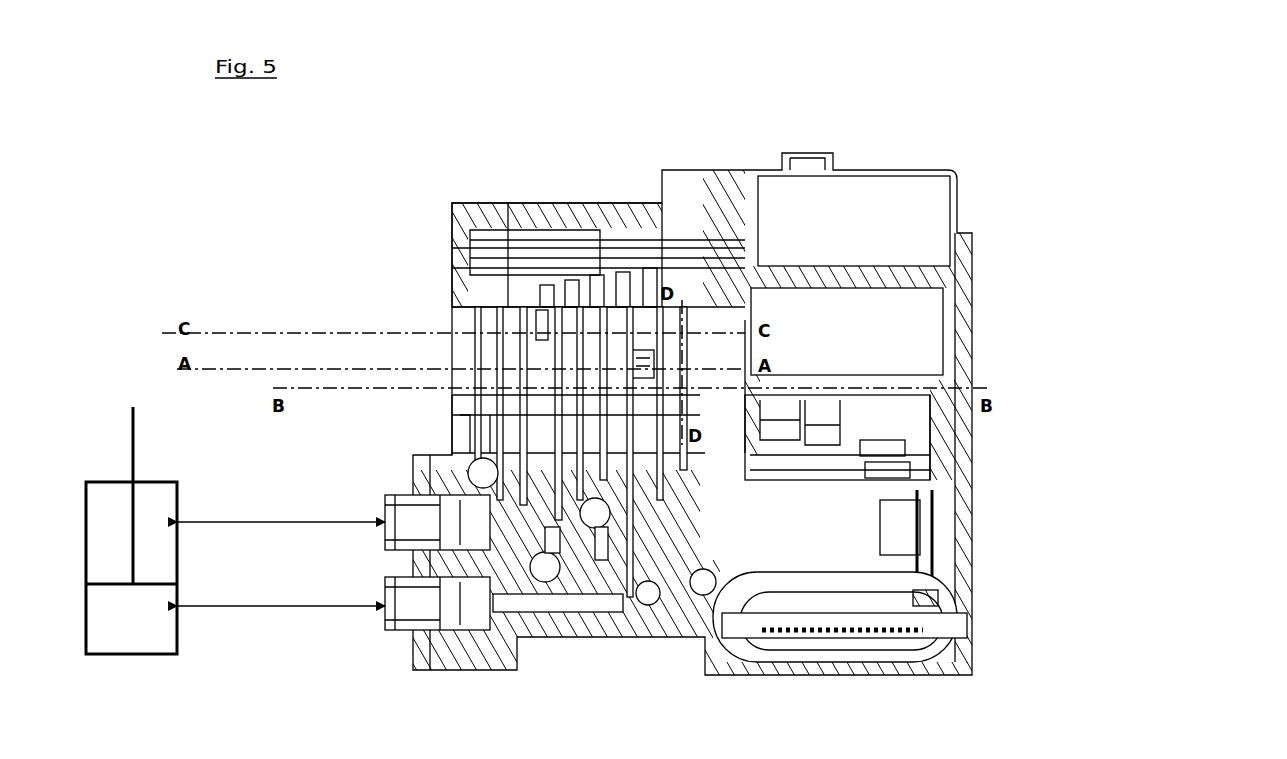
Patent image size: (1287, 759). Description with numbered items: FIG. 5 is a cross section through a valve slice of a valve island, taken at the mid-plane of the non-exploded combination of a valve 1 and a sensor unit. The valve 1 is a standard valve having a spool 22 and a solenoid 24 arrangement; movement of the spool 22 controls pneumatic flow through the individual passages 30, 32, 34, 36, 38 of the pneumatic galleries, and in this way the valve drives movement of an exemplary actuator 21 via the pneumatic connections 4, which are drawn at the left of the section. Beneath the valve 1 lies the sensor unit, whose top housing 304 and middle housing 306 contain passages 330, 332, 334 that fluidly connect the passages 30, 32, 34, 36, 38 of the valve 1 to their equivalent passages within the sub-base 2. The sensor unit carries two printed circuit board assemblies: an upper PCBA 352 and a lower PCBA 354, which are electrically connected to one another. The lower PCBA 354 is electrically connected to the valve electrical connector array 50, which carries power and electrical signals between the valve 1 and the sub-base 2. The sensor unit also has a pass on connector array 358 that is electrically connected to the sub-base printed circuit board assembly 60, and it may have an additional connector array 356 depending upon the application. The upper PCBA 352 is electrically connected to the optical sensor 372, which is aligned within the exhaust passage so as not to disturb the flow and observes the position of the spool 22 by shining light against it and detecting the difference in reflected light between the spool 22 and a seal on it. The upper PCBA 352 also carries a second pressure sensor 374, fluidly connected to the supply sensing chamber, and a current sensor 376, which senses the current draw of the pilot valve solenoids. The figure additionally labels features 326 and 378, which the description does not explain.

The valve 1 is at (607, 202).
The sub-base 2 is at (965, 582).
The pneumatic connections 4 is at (383, 510).
The actuator 21 is at (133, 482).
The spool 22 is at (618, 240).
The solenoid 24 is at (730, 155).
The passage 30 is at (547, 292).
The passage 32 is at (572, 287).
The passage 34 is at (597, 280).
The passage 36 is at (623, 277).
The passage 38 is at (650, 270).
The valve electrical connector array 50 is at (937, 422).
The sub-base Printed Circuit Board Assembly 60 is at (883, 617).
The top housing 304 is at (450, 392).
The middle housing 306 is at (450, 420).
The valve 326 is at (628, 358).
The passage 330 is at (543, 392).
The passage 332 is at (567, 390).
The passage 334 is at (590, 388).
The upper PCBA 352 is at (890, 450).
The lower PCBA 354 is at (900, 472).
The additional connector array 356 is at (918, 545).
The pass on connector array 358 is at (927, 513).
The optical sensor 372 is at (543, 317).
The second pressure sensor 374 is at (780, 435).
The current sensor 376 is at (817, 440).
The channel 378 is at (887, 457).